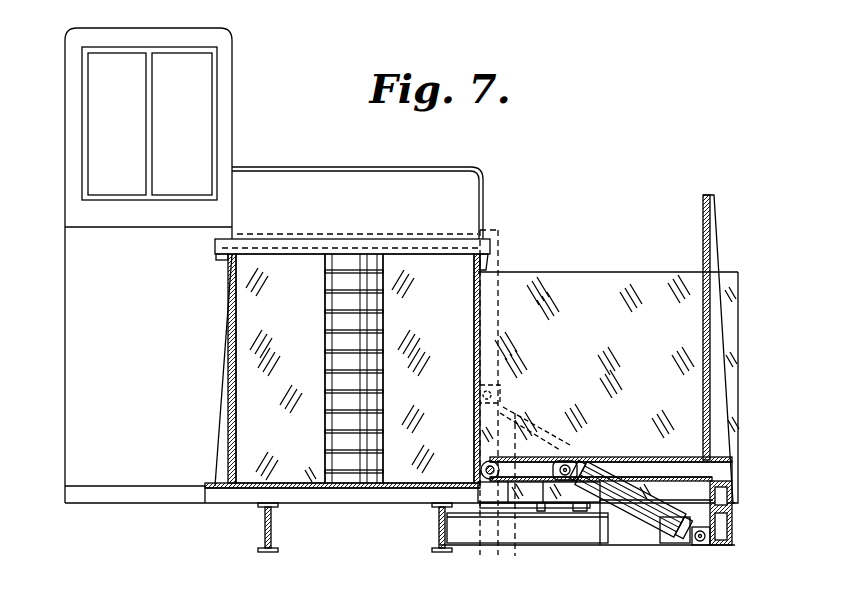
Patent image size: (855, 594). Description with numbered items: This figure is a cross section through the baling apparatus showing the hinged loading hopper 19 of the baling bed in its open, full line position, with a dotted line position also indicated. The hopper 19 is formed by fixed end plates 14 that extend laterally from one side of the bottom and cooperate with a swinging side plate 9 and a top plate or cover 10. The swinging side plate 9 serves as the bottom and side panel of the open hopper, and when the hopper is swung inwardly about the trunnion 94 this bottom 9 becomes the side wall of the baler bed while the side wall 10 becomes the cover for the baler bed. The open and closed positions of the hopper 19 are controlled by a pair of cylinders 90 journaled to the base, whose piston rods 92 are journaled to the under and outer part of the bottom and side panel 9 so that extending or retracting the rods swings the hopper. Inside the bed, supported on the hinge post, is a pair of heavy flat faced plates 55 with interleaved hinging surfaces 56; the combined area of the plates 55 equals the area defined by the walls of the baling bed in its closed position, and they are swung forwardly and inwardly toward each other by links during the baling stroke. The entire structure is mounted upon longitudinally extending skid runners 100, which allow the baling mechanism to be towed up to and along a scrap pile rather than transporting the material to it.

The swinging side plate 9 is at (668, 457).
The top plate or cover 10 is at (702, 255).
The fixed end plates 14 is at (567, 272).
The loading hopper 19 is at (610, 387).
The heavy flat faced plates 55 is at (430, 270).
The interleaved hinging surfaces 56 is at (338, 320).
The cylinders 90 is at (650, 520).
The piston rods 92 is at (573, 478).
The trunnion 94 is at (482, 483).
The skid runners 100 is at (440, 552).